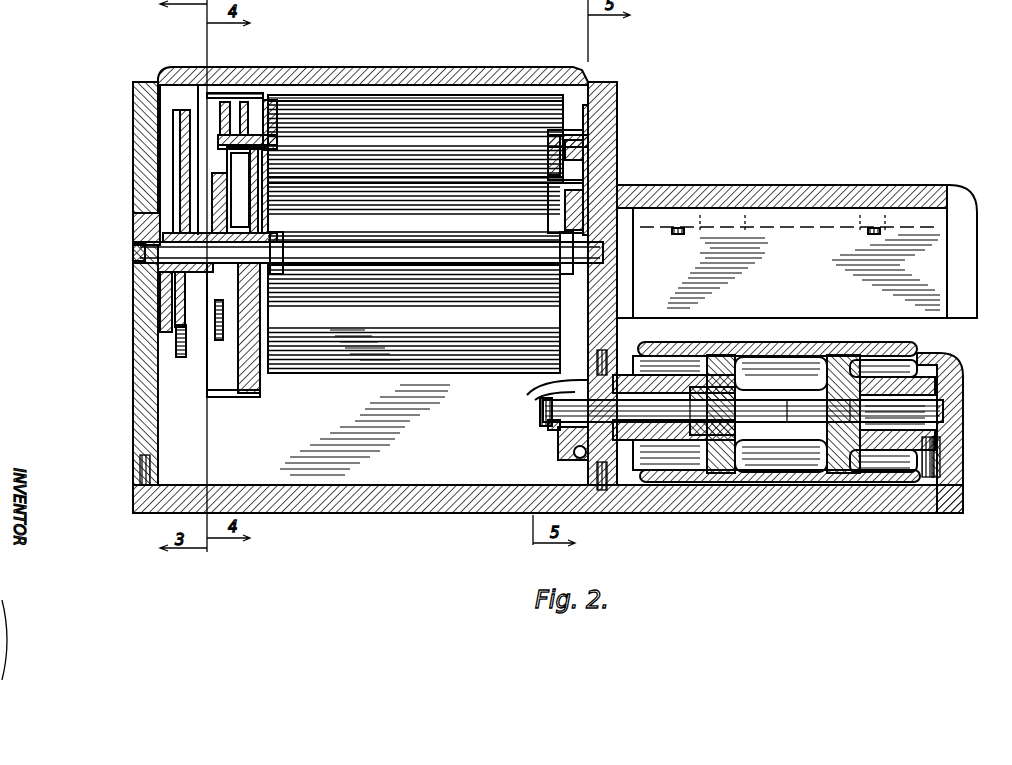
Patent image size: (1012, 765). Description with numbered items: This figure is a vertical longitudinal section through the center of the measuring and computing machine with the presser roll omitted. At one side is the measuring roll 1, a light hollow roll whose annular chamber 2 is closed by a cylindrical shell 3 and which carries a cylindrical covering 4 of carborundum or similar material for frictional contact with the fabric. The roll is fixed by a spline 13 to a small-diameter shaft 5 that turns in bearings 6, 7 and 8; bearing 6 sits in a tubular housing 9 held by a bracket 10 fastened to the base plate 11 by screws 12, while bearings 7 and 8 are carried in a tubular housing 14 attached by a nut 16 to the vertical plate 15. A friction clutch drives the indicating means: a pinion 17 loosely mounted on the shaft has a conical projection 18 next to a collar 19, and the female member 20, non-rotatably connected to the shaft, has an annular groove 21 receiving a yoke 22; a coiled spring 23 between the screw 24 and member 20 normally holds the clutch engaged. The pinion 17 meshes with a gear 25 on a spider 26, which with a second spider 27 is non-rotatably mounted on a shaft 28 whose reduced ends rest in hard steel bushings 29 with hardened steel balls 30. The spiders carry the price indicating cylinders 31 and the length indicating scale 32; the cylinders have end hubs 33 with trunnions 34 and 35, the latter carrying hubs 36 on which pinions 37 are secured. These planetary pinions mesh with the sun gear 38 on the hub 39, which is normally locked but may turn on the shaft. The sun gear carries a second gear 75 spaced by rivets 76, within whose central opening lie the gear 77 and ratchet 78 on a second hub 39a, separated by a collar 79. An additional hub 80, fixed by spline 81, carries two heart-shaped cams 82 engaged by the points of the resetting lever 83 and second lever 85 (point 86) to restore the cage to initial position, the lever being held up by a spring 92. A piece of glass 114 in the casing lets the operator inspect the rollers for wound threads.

The measuring roll 1 is at (905, 355).
The annular chamber 2 is at (795, 372).
The cylindrical shell 3 is at (715, 357).
The cylindrical covering 4 is at (845, 358).
The shaft 5 is at (790, 445).
The bearing 6 is at (845, 475).
The bearing 7 is at (700, 475).
The bearing 8 is at (608, 475).
The tubular housing 9 is at (893, 470).
The bracket 10 is at (940, 457).
The base plate 11 is at (278, 503).
The screws 12 is at (940, 477).
The spline 13 is at (820, 475).
The tubular housing 14 is at (660, 475).
The vertical plate 15 is at (600, 187).
The nut 16 is at (537, 400).
The pinion 17 is at (558, 440).
The conical projection 18 is at (545, 405).
The collar 19 is at (552, 420).
The female member 20 is at (548, 410).
The annular groove 21 is at (552, 412).
The yoke 22 is at (556, 428).
The coiled spring 23 is at (560, 425).
The screw 24 is at (552, 418).
The gear 25 is at (612, 92).
The spider 26 is at (585, 118).
The second spider 27 is at (266, 98).
The shaft 28 is at (388, 268).
The hard steel bushings 29 is at (140, 262).
The hardened steel balls 30 is at (133, 248).
The price indicating cylinders 31 is at (368, 122).
The length indicating scale 32 is at (240, 100).
The end hubs 33 is at (552, 125).
The trunnion 34 is at (548, 138).
The trunnion 35 is at (222, 120).
The hubs 36 is at (252, 95).
The pinions 37 is at (212, 170).
The sun gear 38 is at (162, 78).
The hub 39 is at (148, 405).
The second hub 39a is at (150, 205).
The second gear 75 is at (172, 140).
The rivets 76 is at (170, 352).
The gear 77 is at (172, 220).
The ratchet 78 is at (175, 180).
The collar 79 is at (168, 335).
The hub 80 is at (140, 300).
The spline 81 is at (160, 285).
The heart-shaped cams 82 is at (180, 305).
The resetting lever 83 is at (248, 190).
The second lever 85 is at (172, 108).
The point 86 is at (185, 205).
The spring 92 is at (182, 358).
The glass 114 is at (828, 205).